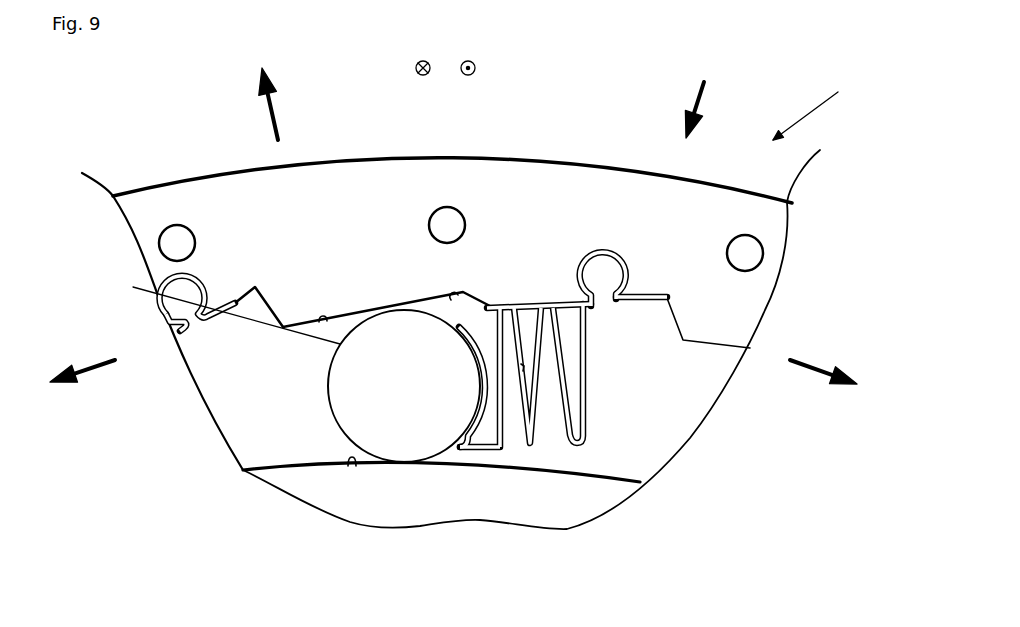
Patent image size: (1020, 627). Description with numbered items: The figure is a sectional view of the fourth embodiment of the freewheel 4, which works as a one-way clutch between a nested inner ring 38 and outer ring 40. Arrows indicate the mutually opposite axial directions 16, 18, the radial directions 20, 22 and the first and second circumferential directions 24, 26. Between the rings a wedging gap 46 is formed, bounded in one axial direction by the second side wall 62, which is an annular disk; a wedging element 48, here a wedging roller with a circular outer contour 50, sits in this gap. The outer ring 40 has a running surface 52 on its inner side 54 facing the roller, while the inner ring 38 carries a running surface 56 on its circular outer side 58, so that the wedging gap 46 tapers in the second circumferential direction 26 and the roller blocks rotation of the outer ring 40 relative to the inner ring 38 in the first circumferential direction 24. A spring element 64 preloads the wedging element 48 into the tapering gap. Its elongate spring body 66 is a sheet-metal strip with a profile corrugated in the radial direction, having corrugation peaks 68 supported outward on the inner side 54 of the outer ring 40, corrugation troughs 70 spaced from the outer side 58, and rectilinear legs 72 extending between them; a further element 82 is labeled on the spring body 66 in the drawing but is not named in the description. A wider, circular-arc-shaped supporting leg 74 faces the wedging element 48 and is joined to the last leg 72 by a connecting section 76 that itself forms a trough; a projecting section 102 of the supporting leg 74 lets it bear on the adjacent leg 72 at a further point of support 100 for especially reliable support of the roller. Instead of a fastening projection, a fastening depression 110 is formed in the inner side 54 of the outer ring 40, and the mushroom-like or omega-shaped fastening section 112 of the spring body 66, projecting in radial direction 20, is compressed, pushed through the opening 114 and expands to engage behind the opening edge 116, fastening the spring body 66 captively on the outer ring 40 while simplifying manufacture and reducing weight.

The freewheel 4 is at (808, 108).
The axial direction 16 is at (476, 68).
The axial direction 18 is at (415, 68).
The radial direction 20 is at (268, 111).
The radial direction 22 is at (702, 96).
The first circumferential direction 24 is at (815, 371).
The second circumferential direction 26 is at (100, 367).
The inner ring 38 is at (300, 497).
The outer ring 40 is at (160, 205).
The wedging gap 46 is at (332, 478).
The wedging element 48 is at (365, 437).
The outer contour 50 is at (340, 344).
The running surface 52 is at (325, 320).
The inner side 54 is at (456, 294).
The running surface 56 is at (357, 462).
The outer side 58 is at (265, 467).
The second side wall 62 is at (265, 385).
The spring element 64 is at (532, 470).
The spring body 66 is at (611, 311).
The corrugation peak 68 is at (509, 310).
The corrugation trough 70 is at (543, 448).
The leg 72 is at (573, 392).
The supporting leg 74 is at (462, 379).
The connecting section 76 is at (483, 443).
The spring element 82 is at (529, 440).
The point of support 100 is at (522, 366).
The projecting section 102 is at (477, 443).
The fastening depression 110 is at (624, 266).
The fastening section 112 is at (609, 236).
The opening 114 is at (584, 380).
The opening edge 116 is at (570, 301).